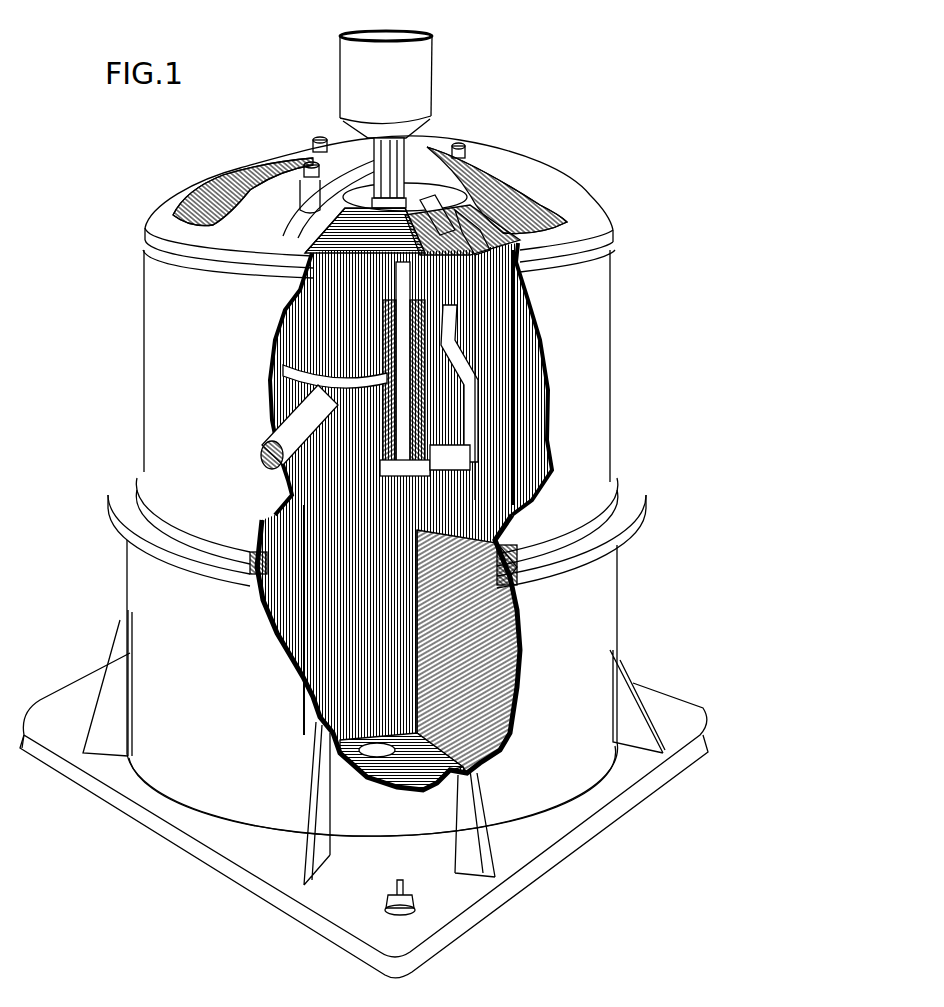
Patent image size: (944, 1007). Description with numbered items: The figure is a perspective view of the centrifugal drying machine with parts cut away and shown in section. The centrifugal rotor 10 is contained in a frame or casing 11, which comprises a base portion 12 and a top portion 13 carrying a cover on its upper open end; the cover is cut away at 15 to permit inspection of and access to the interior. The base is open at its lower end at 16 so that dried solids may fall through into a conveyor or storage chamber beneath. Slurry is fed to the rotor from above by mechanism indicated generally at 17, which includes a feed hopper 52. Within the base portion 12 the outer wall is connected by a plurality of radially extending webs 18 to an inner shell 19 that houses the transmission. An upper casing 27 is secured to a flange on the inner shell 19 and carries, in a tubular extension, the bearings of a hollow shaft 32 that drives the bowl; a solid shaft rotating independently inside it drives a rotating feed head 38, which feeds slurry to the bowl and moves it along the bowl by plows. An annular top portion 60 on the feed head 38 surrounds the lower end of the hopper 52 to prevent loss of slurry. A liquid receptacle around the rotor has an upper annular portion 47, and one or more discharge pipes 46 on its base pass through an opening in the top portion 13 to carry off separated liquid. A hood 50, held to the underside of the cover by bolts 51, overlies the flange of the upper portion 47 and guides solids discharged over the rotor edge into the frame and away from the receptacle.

The centrifugal rotor 10 is at (470, 222).
The frame or casing 11 is at (617, 548).
The base portion 12 is at (618, 610).
The top portion 13 is at (612, 405).
The cut-away portion of cover 15 is at (187, 203).
The open lower end 16 is at (358, 753).
The feed mechanism 17 is at (407, 138).
The radially extending webs 18 is at (513, 682).
The inner shell 19 is at (480, 470).
The upper casing 27 is at (470, 437).
The hollow shaft 32 is at (400, 397).
The rotating feed head 38 is at (430, 193).
The discharge pipes 46 is at (273, 452).
The upper annular portion of receptacle 47 is at (490, 343).
The hood 50 is at (463, 217).
The bolts 51 is at (327, 140).
The feed hopper 52 is at (433, 75).
The annular top portion 60 is at (386, 195).